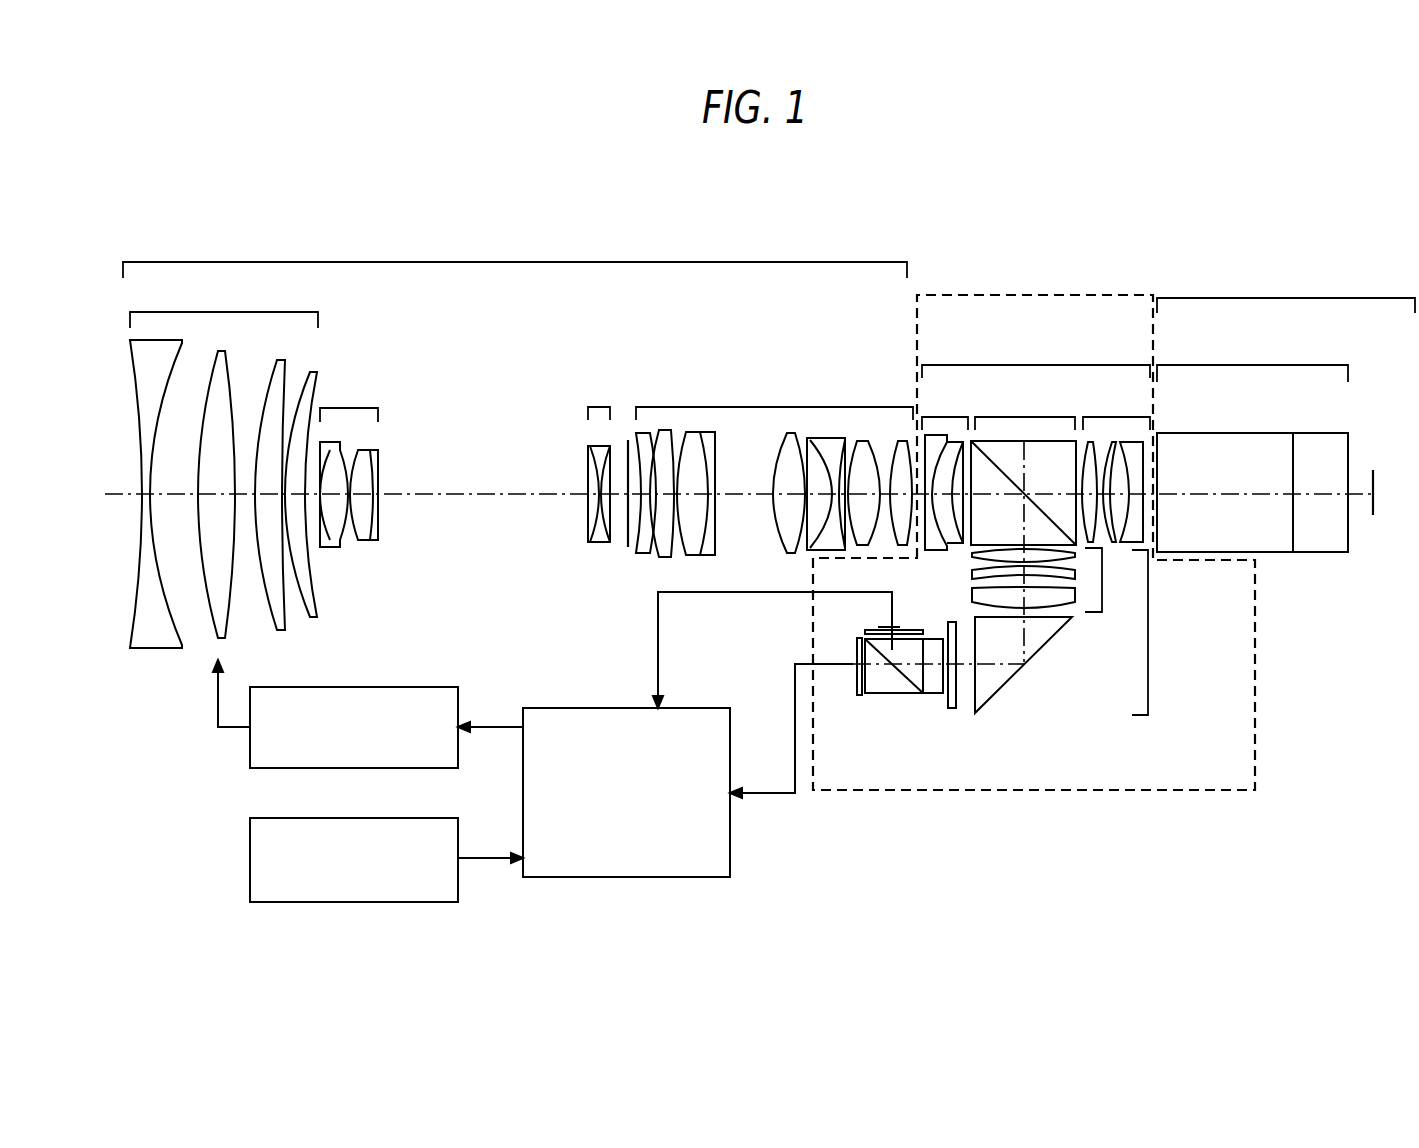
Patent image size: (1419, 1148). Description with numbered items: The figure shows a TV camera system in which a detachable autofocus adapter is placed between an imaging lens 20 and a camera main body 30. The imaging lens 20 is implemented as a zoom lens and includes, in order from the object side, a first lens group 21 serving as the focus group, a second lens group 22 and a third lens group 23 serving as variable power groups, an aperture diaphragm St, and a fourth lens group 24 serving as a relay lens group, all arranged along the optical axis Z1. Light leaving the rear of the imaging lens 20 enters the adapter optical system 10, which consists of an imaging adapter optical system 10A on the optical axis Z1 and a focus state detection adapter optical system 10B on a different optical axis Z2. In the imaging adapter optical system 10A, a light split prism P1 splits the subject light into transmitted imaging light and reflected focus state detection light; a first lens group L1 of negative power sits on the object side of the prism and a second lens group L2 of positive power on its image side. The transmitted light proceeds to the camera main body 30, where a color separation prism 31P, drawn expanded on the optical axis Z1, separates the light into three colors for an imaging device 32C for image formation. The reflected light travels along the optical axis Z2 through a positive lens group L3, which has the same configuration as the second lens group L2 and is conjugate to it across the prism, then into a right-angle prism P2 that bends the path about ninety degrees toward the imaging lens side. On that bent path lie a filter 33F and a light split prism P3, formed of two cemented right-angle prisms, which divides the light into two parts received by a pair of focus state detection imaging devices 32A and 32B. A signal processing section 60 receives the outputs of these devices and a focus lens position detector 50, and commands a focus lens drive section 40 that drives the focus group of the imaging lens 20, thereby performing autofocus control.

The imaging lens 20 is at (515, 240).
The first lens group 21 is at (224, 463).
The second lens group 22 is at (349, 462).
The third lens group 23 is at (600, 457).
The fourth lens group 24 is at (774, 465).
The aperture diaphragm St is at (628, 440).
The optical axis Z1 is at (115, 500).
The adapter optical system 10 is at (1033, 292).
The imaging adapter optical system 10A is at (1036, 355).
The focus state detection adapter optical system 10B is at (1164, 632).
The first lens group L1 is at (945, 467).
The light split prism P1 is at (1023, 465).
The optical axis Z2 is at (1001, 520).
The second lens group L2 is at (1116, 463).
The positive lens group L3 is at (1052, 580).
The right-angle prism P2 is at (1047, 628).
The light split prism P3 is at (892, 685).
The focus state detection imaging device 32A is at (853, 675).
The focus state detection imaging device 32B is at (900, 633).
The filter 33F is at (953, 708).
The camera main body 30 is at (1286, 290).
The color separation prism 31P is at (1252, 443).
The imaging device for image formation 32C is at (1373, 470).
The focus lens drive section 40 is at (390, 687).
The focus lens position detector 50 is at (390, 818).
The signal processing section 60 is at (562, 703).